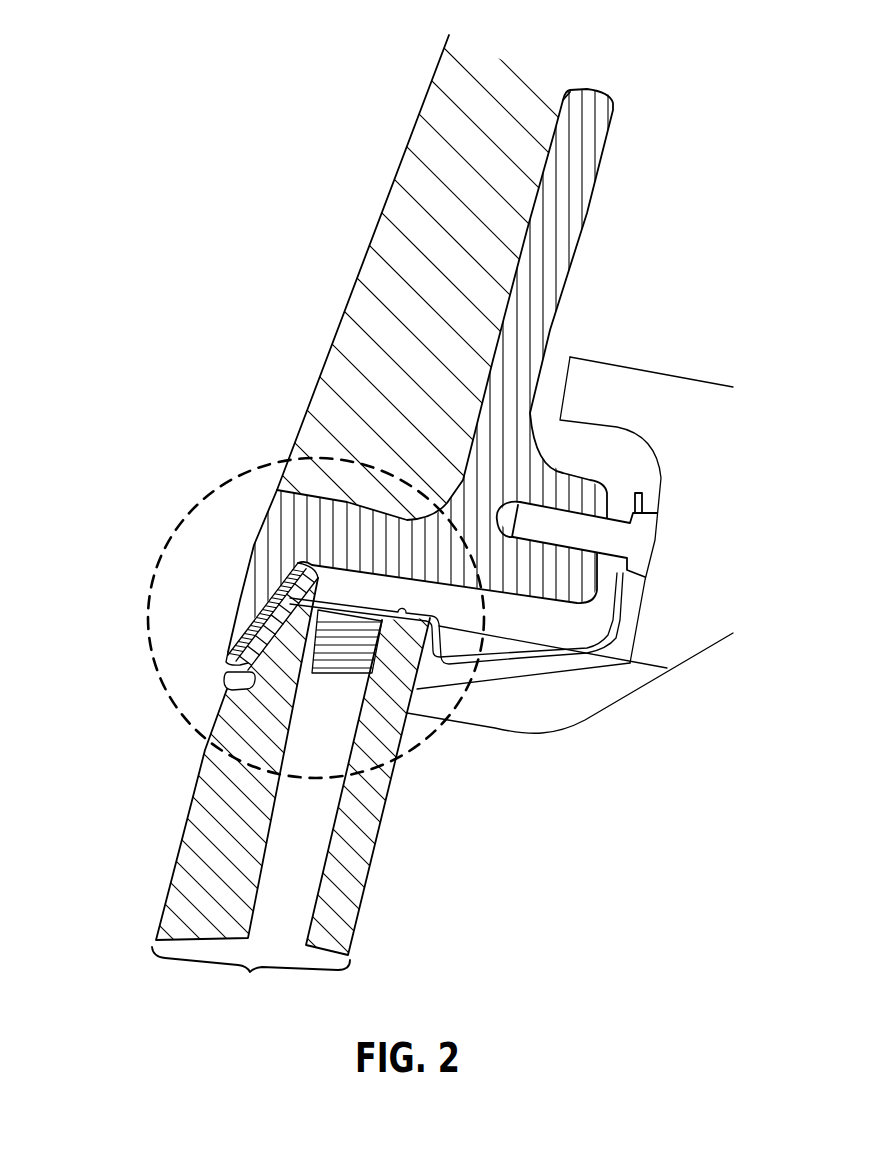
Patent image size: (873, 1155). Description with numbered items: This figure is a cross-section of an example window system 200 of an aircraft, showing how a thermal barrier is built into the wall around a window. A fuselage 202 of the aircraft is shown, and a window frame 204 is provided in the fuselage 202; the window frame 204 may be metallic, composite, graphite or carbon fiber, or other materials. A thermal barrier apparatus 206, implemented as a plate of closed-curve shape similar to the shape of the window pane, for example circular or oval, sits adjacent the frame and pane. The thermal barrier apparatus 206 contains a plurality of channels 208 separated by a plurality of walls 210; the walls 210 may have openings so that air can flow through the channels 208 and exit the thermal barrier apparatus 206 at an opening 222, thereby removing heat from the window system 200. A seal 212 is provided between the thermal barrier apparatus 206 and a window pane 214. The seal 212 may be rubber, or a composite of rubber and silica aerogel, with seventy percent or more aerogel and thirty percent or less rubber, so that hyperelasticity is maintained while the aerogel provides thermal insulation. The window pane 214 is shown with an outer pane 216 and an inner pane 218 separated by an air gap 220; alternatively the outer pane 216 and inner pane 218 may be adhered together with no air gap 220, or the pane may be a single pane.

The window system 200 is at (160, 113).
The fuselage 202 is at (417, 245).
The window frame 204 is at (286, 517).
The thermal barrier apparatus 206 is at (296, 575).
The channels 208 is at (233, 655).
The walls 210 is at (262, 617).
The seal 212 is at (300, 672).
The window pane 214 is at (380, 776).
The outer pane 216 is at (193, 888).
The inner pane 218 is at (343, 908).
The air gap 220 is at (280, 907).
The opening 222 is at (325, 572).